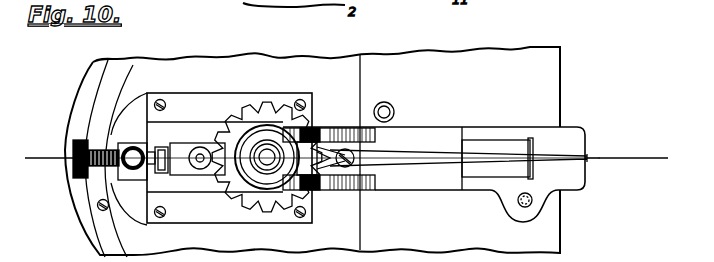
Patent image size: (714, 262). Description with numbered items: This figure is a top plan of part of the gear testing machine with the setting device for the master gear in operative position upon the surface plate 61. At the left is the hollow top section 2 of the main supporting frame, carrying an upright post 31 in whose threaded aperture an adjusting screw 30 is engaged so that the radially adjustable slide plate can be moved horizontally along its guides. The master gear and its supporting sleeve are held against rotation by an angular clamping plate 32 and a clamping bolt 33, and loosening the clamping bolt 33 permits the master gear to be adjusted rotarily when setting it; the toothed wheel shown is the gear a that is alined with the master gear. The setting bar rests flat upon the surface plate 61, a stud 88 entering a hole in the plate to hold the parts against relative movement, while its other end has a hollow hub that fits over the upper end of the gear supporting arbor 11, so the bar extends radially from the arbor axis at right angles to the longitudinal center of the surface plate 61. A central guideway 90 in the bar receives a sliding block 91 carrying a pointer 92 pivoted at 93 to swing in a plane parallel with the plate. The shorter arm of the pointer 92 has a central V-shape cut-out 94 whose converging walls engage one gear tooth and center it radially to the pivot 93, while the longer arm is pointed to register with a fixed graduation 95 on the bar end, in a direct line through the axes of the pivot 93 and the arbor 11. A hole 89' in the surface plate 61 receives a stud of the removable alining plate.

The hollow top section 2 is at (148, 68).
The gear supporting arbor 11 is at (356, 162).
The adjusting screw 30 is at (73, 146).
The upright post 31 is at (122, 165).
The angular clamping plate 32 is at (192, 145).
The clamping bolt 33 is at (200, 170).
The gear under test a is at (268, 200).
The pivot 93 is at (329, 173).
The V-shape cut-out 94 is at (334, 140).
The sliding block 91 is at (449, 133).
The central guideway 90 is at (497, 140).
The pointer 92 is at (421, 160).
The fixed graduation 95 is at (575, 162).
The surface plate 61 is at (545, 88).
The stud 88 is at (525, 208).
The hole in the surface plate 89' is at (399, 107).